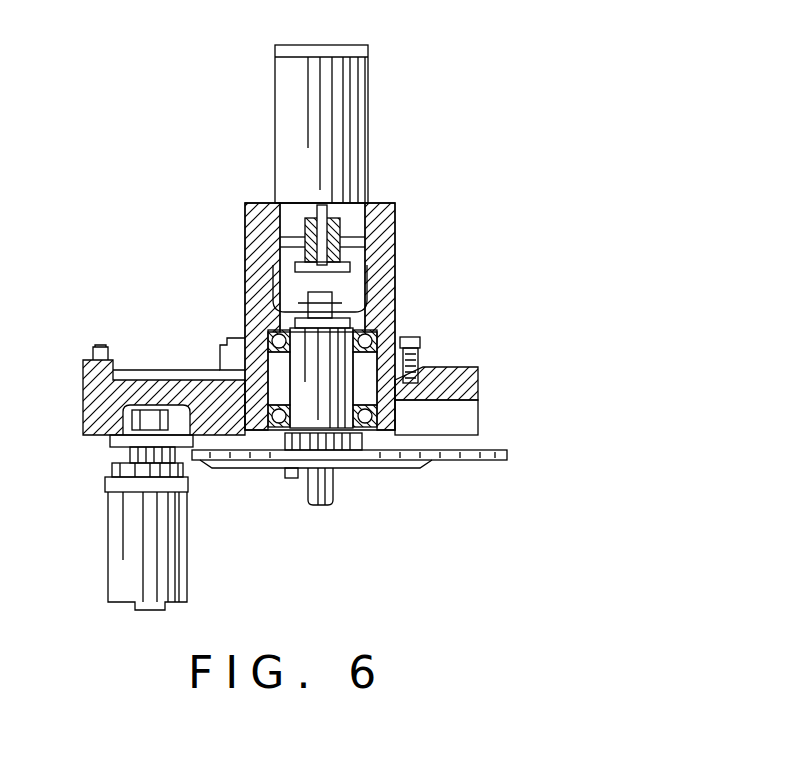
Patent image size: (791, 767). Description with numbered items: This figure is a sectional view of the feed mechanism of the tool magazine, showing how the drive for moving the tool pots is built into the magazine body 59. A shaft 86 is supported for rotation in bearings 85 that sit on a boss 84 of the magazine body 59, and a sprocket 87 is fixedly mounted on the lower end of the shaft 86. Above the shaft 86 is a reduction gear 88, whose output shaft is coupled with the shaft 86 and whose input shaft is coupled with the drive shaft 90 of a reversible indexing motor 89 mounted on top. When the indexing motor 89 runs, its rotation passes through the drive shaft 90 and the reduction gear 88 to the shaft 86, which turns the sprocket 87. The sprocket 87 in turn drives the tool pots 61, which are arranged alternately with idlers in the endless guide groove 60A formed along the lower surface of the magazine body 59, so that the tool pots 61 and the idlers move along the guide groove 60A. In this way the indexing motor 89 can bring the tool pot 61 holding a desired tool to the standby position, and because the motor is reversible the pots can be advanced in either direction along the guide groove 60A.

The indexing motor 89 is at (368, 116).
The drive shaft 90 is at (340, 225).
The reduction gear 88 is at (360, 265).
The shaft 86 is at (358, 378).
The bearings 85 is at (268, 333).
The boss 84 is at (430, 373).
The magazine body 59 is at (478, 392).
The endless guide groove 60A is at (152, 368).
The sprocket 87 is at (400, 460).
The tool pot 61 is at (187, 557).